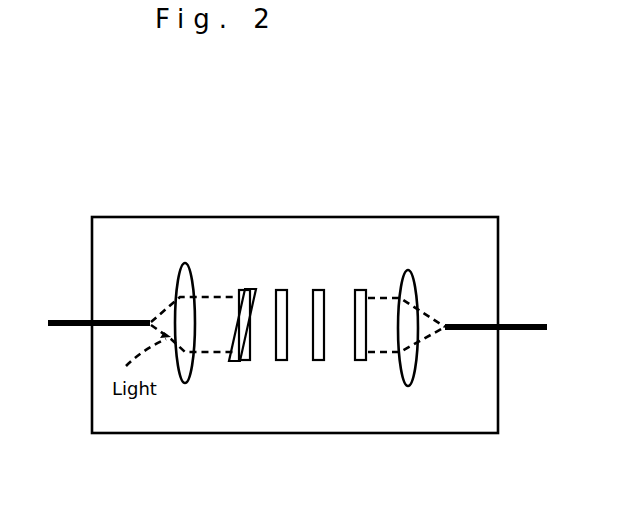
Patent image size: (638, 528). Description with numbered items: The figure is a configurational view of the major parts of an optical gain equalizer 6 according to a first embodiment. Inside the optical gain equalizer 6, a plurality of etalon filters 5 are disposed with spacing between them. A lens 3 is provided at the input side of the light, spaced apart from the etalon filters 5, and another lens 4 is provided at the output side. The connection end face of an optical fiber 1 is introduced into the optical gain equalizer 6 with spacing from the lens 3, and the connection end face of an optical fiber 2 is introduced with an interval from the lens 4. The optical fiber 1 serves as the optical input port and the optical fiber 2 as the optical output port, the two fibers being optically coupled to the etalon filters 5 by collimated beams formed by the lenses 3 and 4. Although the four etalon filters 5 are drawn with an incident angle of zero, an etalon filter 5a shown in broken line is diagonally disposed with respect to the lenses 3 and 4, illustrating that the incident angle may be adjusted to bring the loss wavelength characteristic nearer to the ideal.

The optical fiber 1 is at (62, 322).
The optical fiber 2 is at (538, 326).
The lens 3 is at (188, 263).
The lens 4 is at (412, 271).
The etalon filter 5 is at (245, 362).
The etalon filter 5a is at (228, 363).
The optical gain equalizer 6 is at (472, 217).